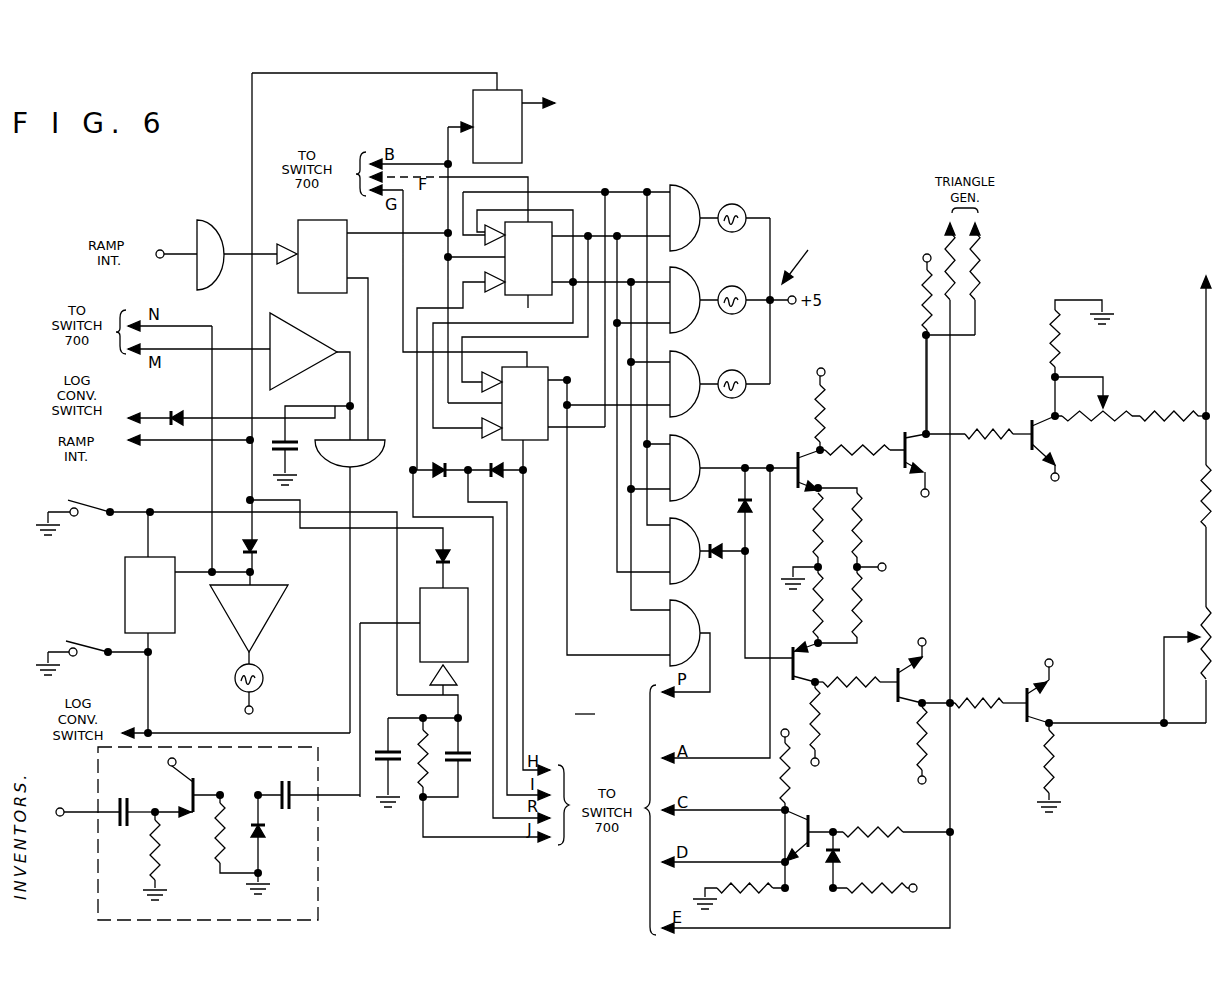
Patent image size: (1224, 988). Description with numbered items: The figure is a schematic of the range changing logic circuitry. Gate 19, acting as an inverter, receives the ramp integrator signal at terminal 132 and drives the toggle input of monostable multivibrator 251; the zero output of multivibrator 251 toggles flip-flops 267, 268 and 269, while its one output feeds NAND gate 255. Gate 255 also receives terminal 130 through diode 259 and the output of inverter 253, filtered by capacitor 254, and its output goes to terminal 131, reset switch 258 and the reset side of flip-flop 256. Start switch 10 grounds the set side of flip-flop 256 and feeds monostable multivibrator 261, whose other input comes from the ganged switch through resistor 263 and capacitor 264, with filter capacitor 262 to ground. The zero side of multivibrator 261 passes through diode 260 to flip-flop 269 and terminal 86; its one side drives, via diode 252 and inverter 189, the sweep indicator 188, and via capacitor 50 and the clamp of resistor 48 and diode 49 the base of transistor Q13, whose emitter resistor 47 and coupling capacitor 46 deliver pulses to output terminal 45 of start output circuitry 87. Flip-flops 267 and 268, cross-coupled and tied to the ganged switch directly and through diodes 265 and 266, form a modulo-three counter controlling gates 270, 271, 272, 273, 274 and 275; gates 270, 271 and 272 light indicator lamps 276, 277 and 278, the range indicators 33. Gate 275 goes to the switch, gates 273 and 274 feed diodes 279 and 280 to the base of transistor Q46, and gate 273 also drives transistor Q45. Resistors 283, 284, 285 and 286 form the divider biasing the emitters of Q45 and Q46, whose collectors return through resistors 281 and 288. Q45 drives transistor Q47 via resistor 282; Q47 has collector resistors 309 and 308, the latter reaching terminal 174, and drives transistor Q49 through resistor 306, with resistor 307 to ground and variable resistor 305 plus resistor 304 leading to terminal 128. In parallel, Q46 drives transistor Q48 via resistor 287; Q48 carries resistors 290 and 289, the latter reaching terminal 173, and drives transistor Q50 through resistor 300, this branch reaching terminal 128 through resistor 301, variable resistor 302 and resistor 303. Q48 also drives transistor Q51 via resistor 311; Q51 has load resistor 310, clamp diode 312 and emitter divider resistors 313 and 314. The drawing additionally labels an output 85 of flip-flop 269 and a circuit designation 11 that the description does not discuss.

The terminal 132 is at (159, 248).
The gate 19 is at (213, 228).
The monostable multivibrator 251 is at (317, 222).
The inverter 253 is at (302, 333).
The filter capacitor 254 is at (295, 460).
The NAND gate 255 is at (360, 462).
The diode 252 is at (260, 542).
The inverter 189 is at (263, 607).
The sweep indicator 188 is at (264, 678).
The flip-flop 256 is at (125, 572).
The reset switch 258 is at (88, 640).
The start switch 10 is at (92, 500).
The terminal 86 is at (130, 443).
The terminal 130 is at (130, 416).
The diode 259 is at (183, 413).
The terminal 131 is at (118, 729).
The start output circuitry 87 is at (98, 749).
The output terminal 45 is at (60, 807).
The capacitor 46 is at (125, 796).
The resistor 47 is at (149, 845).
The resistor 48 is at (215, 833).
The diode 49 is at (270, 836).
The capacitor 50 is at (285, 784).
The transistor Q13 is at (183, 785).
The flip-flop 269 is at (473, 110).
The ramp interrupt output 85 is at (555, 100).
The flip-flop 268 is at (560, 306).
The flip-flop 267 is at (548, 367).
The diode 265 is at (492, 460).
The diode 266 is at (438, 476).
The diode 260 is at (446, 563).
The monostable multivibrator 261 is at (425, 595).
The filter capacitor 262 is at (380, 744).
The resistor 263 is at (418, 765).
The capacitor 264 is at (478, 766).
The timing circuit 11 is at (587, 704).
The gate 270 is at (685, 200).
The gate 271 is at (685, 285).
The gate 272 is at (685, 365).
The gate 273 is at (685, 452).
The gate 274 is at (687, 560).
The gate 275 is at (677, 623).
The indicator lamp 276 is at (745, 209).
The indicator lamp 277 is at (740, 290).
The indicator lamp 278 is at (748, 365).
The range indicators 33 is at (808, 255).
The diode 279 is at (739, 508).
The diode 280 is at (720, 542).
The resistor 281 is at (808, 412).
The resistor 282 is at (831, 446).
The resistor 283 is at (817, 538).
The resistor 284 is at (863, 540).
The resistor 285 is at (818, 604).
The resistor 286 is at (865, 618).
The resistor 287 is at (858, 679).
The resistor 288 is at (821, 730).
The resistor 289 is at (946, 253).
The resistor 290 is at (915, 738).
The transistor Q45 is at (830, 470).
The transistor Q46 is at (823, 664).
The transistor Q47 is at (906, 464).
The transistor Q48 is at (902, 664).
The transistor Q49 is at (1039, 447).
The transistor Q50 is at (1056, 685).
The transistor Q51 is at (795, 835).
The terminal 173 is at (948, 221).
The terminal 174 is at (979, 224).
The resistor 308 is at (984, 281).
The resistor 309 is at (920, 293).
The resistor 307 is at (1050, 346).
The resistor 306 is at (982, 434).
The variable resistor 305 is at (1108, 408).
The resistor 304 is at (1175, 420).
The resistor 303 is at (1200, 496).
The variable resistor 302 is at (1199, 626).
The resistor 301 is at (1040, 760).
The resistor 300 is at (988, 696).
The terminal 128 is at (1205, 282).
The resistor 310 is at (776, 774).
The resistor 311 is at (878, 828).
The diode 312 is at (847, 852).
The resistor 313 is at (874, 896).
The resistor 314 is at (742, 896).